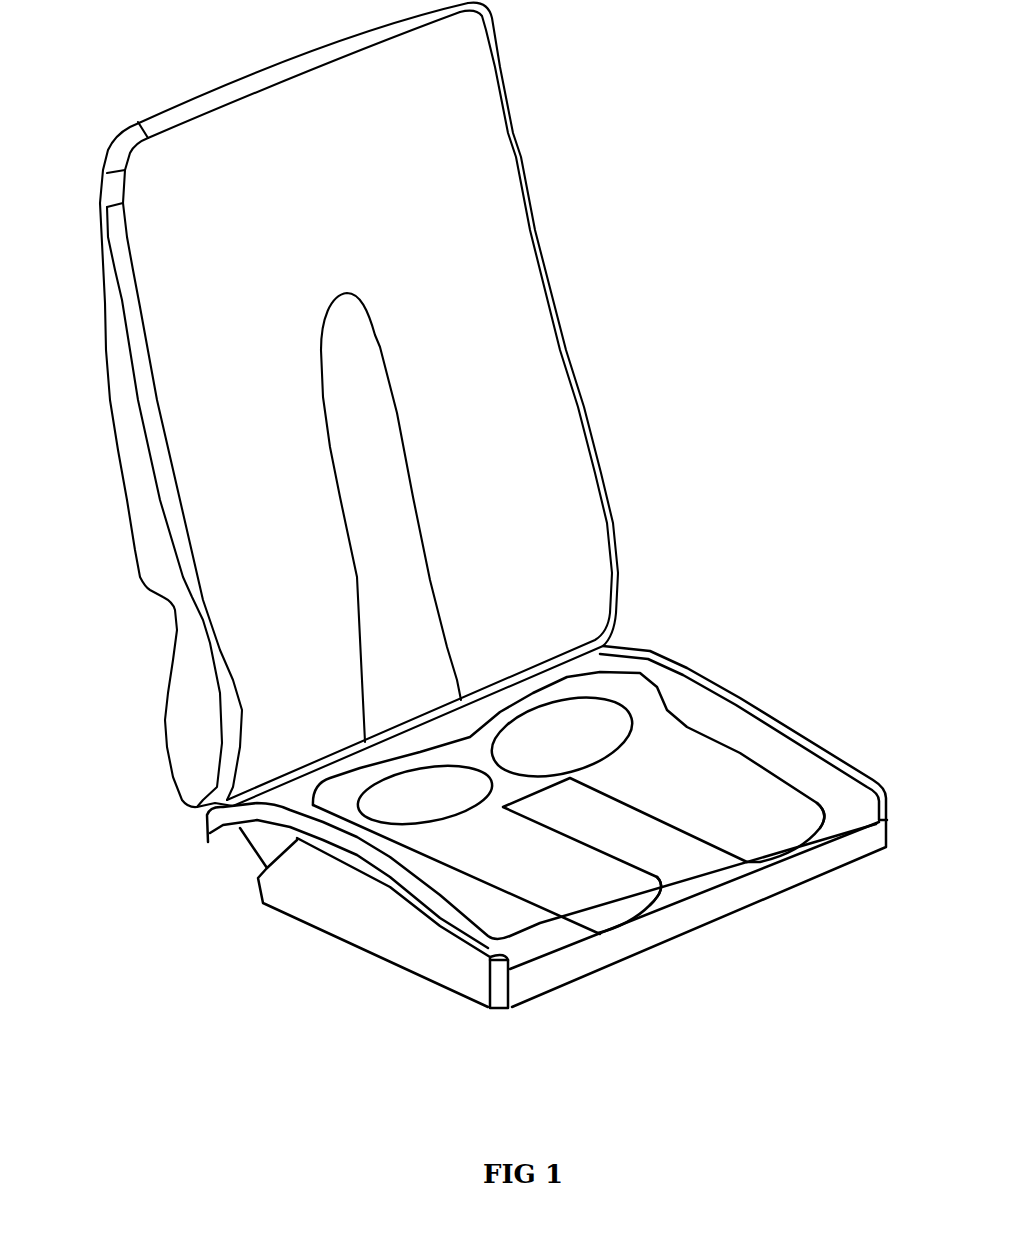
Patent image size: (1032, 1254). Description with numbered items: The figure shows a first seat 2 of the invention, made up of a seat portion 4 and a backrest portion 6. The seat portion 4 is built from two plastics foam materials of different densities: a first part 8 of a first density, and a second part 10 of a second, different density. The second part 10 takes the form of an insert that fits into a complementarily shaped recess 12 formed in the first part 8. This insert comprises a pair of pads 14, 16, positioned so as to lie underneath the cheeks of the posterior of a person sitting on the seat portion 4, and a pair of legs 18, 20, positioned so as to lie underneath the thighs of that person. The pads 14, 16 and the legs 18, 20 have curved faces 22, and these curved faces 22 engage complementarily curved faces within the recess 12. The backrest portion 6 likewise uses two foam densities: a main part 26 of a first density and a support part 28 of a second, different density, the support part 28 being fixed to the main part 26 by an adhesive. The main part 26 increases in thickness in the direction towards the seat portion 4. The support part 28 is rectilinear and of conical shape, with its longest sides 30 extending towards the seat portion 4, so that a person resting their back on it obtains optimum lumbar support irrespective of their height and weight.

The seat 2 is at (657, 340).
The seat portion 4 is at (768, 712).
The backrest portion 6 is at (535, 232).
The first part 8 is at (794, 760).
The second part 10 is at (688, 763).
The recess 12 is at (746, 864).
The pad 14 is at (562, 737).
The pad 16 is at (424, 795).
The leg 18 is at (762, 828).
The leg 20 is at (597, 897).
The curved faces 22 is at (821, 828).
The main part 26 is at (553, 458).
The support part 28 is at (375, 516).
The longest sides 30 is at (360, 644).